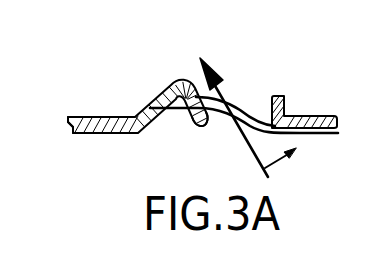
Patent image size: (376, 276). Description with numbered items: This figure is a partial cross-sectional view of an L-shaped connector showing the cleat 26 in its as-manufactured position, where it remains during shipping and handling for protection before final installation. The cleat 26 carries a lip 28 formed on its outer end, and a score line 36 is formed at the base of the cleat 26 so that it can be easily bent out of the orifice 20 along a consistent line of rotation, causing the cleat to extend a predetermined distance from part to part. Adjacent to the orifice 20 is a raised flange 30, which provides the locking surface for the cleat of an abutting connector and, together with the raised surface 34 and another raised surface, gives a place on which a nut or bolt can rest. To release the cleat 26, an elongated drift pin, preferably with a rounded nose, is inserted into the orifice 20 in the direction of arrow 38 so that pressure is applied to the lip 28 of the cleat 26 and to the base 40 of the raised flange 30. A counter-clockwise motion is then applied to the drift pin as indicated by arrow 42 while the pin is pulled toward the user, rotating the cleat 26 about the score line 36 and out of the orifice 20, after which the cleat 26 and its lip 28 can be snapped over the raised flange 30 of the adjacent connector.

The orifice 20 is at (253, 84).
The cleat 26 is at (182, 80).
The lip 28 is at (205, 125).
The raised flange 30 is at (280, 94).
The raised surface 34 is at (221, 69).
The score line 36 is at (134, 134).
The arrow 38 is at (249, 150).
The base of the raised flange 40 is at (286, 135).
The arrow 42 is at (270, 166).